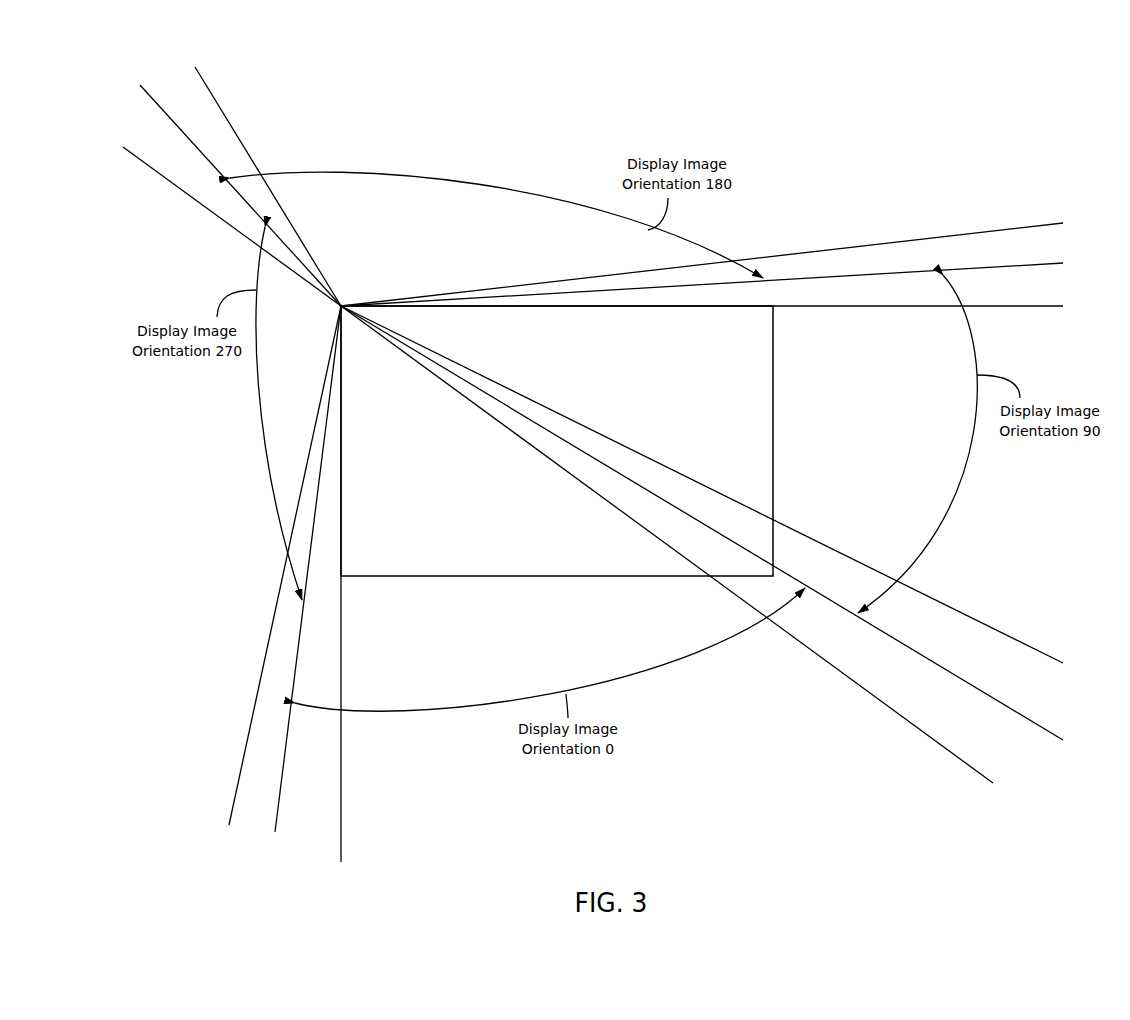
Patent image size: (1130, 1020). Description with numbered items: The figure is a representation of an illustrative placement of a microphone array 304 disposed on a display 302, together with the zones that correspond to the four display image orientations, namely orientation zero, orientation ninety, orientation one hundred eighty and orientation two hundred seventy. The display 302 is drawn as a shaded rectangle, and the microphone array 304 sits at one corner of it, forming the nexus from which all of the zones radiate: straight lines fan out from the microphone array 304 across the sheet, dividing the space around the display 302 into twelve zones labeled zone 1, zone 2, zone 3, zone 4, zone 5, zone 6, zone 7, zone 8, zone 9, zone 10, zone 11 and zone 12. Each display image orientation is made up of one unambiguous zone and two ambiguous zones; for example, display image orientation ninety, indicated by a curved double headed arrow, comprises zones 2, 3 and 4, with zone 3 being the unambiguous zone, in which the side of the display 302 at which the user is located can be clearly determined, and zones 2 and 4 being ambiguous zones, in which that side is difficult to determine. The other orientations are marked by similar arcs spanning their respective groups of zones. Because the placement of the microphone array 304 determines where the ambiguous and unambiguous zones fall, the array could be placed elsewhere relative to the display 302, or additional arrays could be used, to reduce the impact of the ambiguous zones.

The display 302 is at (557, 441).
The microphone array 304 is at (341, 306).
The zone 1 is at (706, 264).
The zone 2 is at (706, 284).
The zone 3 is at (702, 387).
The zone 4 is at (702, 495).
The zone 5 is at (702, 526).
The zone 6 is at (667, 544).
The zone 7 is at (318, 584).
The zone 8 is at (290, 572).
The zone 9 is at (272, 565).
The zone 10 is at (232, 222).
The zone 11 is at (240, 195).
The zone 12 is at (374, 186).